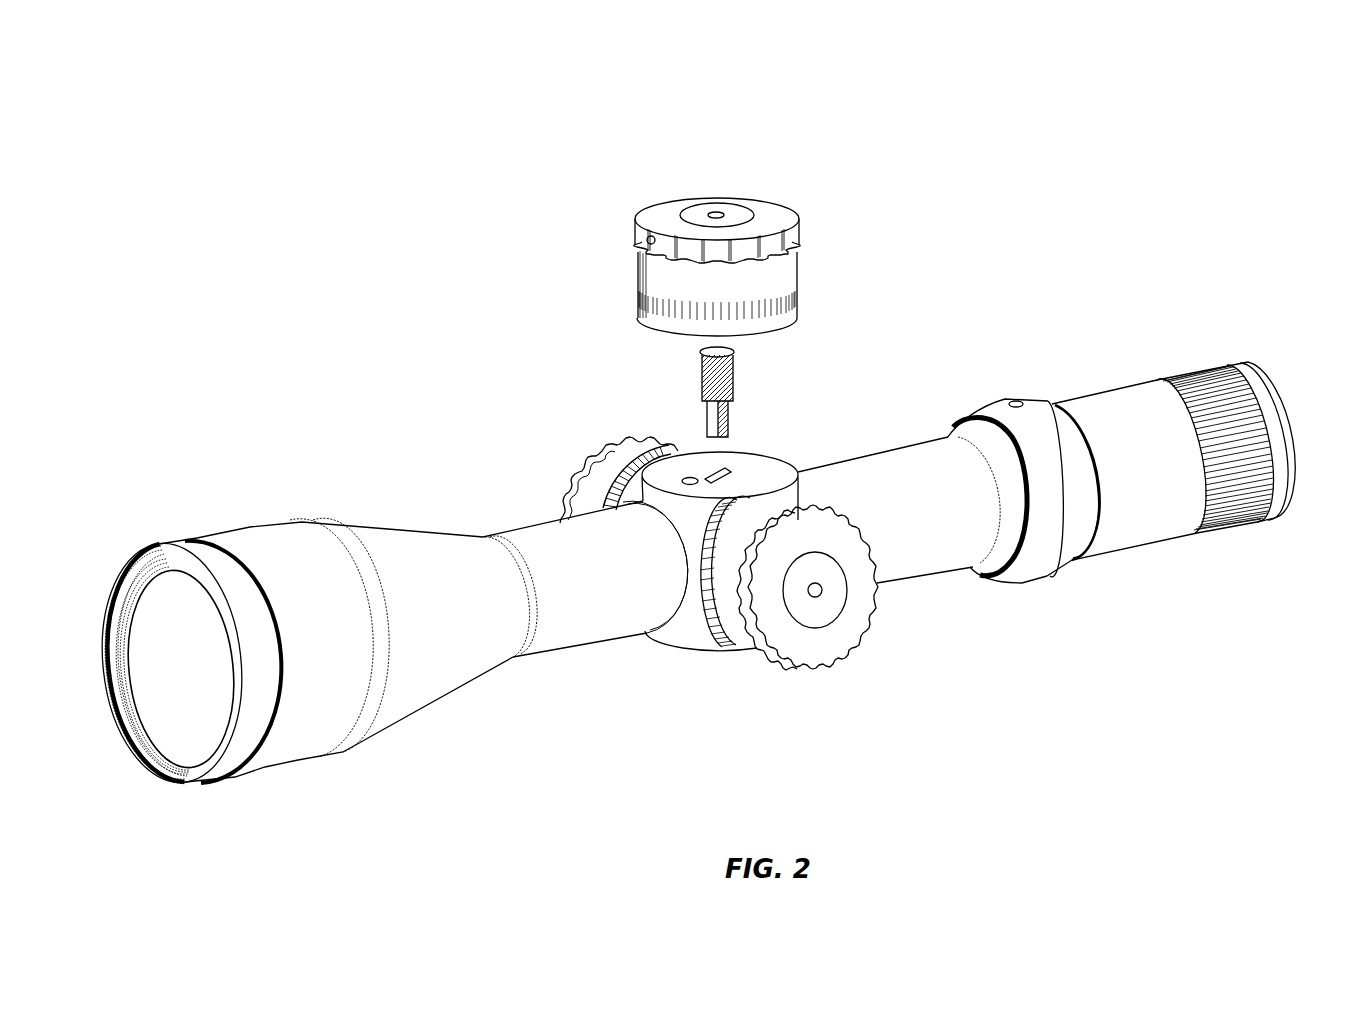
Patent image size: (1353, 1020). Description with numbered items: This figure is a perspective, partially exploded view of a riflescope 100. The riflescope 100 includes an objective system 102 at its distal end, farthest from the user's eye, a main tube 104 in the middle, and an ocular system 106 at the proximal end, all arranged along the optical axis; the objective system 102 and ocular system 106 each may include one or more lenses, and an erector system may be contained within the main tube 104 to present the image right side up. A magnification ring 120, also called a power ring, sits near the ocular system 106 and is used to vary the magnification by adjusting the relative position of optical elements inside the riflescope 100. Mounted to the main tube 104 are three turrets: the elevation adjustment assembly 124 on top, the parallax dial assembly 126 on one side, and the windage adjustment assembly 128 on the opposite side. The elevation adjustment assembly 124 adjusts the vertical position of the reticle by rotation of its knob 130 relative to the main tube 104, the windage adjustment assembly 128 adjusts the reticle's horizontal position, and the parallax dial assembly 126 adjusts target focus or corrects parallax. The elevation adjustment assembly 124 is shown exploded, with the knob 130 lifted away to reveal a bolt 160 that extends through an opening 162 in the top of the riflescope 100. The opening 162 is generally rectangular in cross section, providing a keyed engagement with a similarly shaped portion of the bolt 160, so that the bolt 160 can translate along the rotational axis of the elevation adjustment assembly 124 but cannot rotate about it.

The riflescope 100 is at (887, 257).
The objective system 102 is at (248, 512).
The main tube 104 is at (893, 582).
The ocular system 106 is at (1152, 370).
The magnification ring 120 is at (992, 400).
The elevation adjustment assembly 124 is at (655, 195).
The parallax dial assembly 126 is at (750, 670).
The windage adjustment assembly 128 is at (605, 434).
The knob 130 is at (633, 230).
The bolt 160 is at (737, 373).
The opening 162 is at (730, 477).